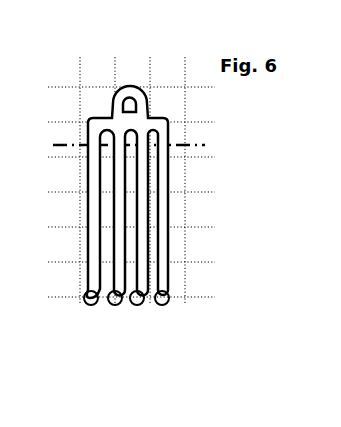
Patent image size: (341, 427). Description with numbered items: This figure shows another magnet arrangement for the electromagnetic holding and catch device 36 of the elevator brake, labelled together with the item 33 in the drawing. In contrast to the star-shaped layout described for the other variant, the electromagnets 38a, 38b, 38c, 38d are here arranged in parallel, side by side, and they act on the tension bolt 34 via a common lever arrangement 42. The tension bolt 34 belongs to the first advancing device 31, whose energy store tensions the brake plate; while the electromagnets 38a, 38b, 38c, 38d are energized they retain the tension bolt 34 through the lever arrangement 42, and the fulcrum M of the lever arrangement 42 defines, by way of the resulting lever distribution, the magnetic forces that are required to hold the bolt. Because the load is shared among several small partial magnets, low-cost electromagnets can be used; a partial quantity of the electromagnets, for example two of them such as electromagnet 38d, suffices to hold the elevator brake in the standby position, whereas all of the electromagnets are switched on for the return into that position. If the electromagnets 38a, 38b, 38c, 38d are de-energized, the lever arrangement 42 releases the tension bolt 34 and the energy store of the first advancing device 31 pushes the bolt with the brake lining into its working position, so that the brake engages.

The grid / carrier layer 33 is at (117, 161).
The holding and catch device 36 is at (61, 67).
The first advancing device 31 is at (211, 97).
The tension bolt 34 is at (138, 90).
The fulcrum M is at (184, 143).
The lever arrangement 42 is at (193, 186).
The electromagnet 38a is at (188, 308).
The electromagnet 38b is at (188, 308).
The electromagnet 38c is at (188, 308).
The electromagnet 38d is at (100, 304).